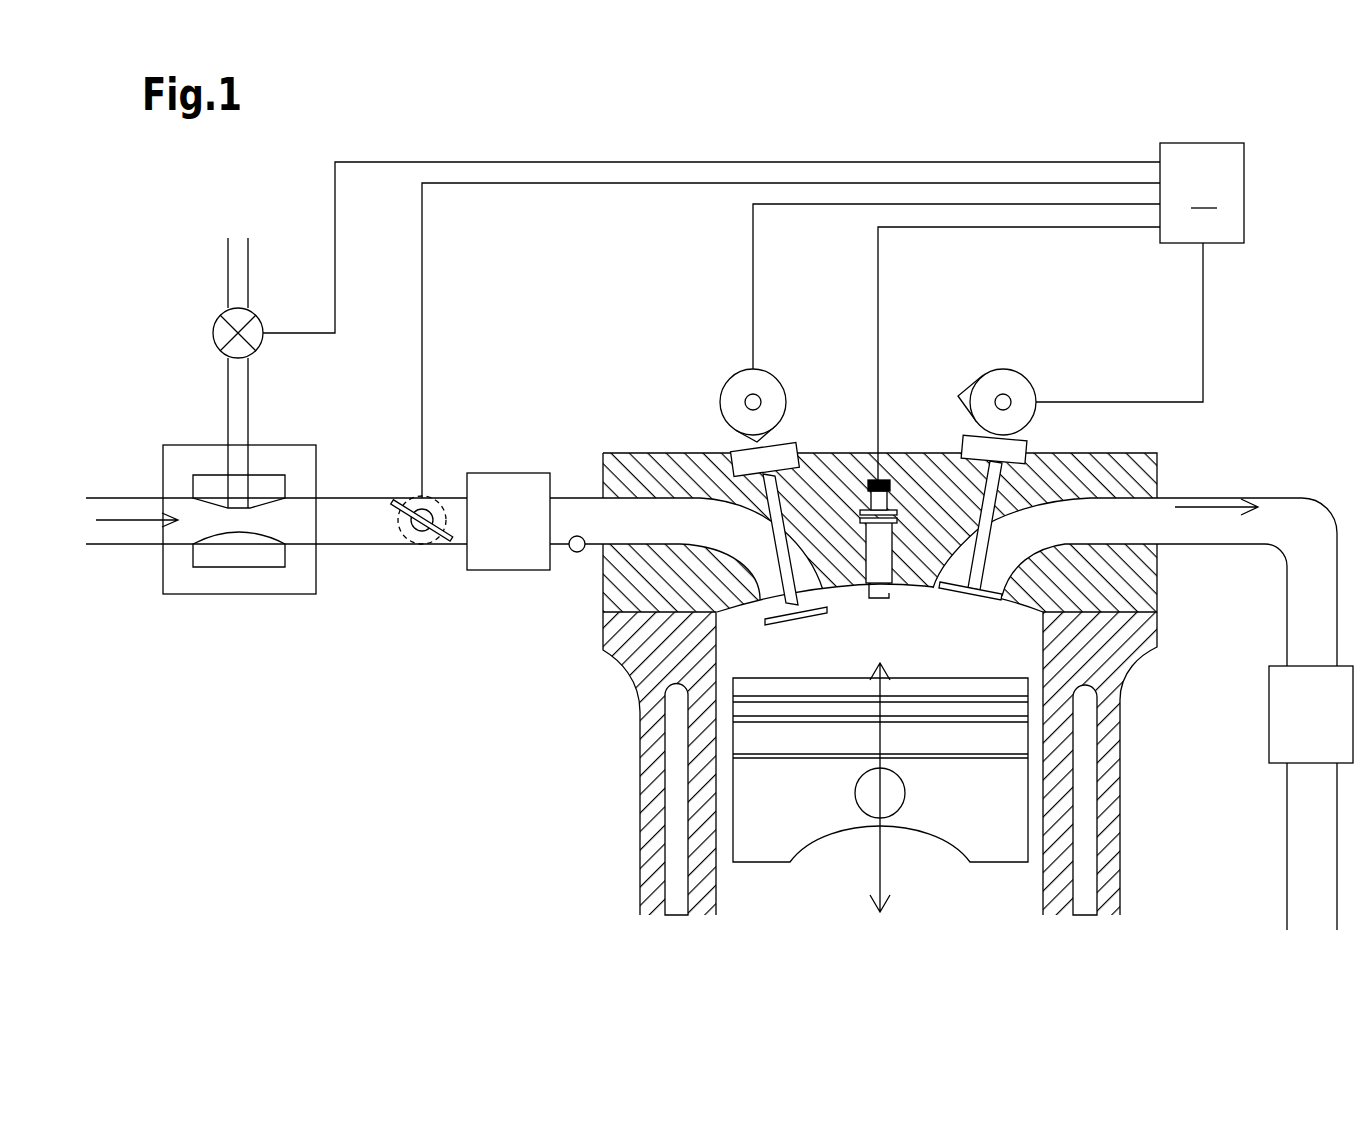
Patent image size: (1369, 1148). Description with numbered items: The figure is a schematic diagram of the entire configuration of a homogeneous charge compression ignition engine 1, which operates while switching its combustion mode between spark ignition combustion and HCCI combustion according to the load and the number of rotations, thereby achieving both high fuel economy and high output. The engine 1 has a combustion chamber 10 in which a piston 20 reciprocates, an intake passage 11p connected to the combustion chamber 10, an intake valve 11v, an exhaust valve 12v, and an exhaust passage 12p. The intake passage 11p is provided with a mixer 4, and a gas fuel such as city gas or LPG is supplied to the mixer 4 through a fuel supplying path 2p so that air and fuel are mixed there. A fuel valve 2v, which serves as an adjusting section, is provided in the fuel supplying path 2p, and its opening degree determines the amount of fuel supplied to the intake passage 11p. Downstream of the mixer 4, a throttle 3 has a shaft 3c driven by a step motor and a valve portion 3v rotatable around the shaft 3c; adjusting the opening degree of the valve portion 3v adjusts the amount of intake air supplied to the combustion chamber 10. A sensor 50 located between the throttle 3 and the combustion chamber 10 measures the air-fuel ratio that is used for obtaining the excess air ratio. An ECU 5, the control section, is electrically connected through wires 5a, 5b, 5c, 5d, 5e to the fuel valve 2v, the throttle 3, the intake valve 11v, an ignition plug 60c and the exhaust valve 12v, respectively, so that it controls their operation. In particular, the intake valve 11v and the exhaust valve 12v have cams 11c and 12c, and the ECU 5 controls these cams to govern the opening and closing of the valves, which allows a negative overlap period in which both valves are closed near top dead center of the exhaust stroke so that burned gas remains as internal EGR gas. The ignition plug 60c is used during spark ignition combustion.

The HCCI engine 1 is at (1310, 167).
The fuel supplying path 2p is at (227, 275).
The fuel valve 2v is at (212, 332).
The throttle 3 is at (470, 483).
The shaft 3c is at (423, 522).
The valve portion 3v is at (450, 538).
The mixer 4 is at (187, 594).
The ECU 5 is at (1202, 193).
The wire 5a is at (1052, 162).
The wire 5b is at (900, 183).
The wire 5c is at (847, 204).
The wire 5d is at (953, 227).
The wire 5e is at (1204, 335).
The combustion chamber 10 is at (763, 662).
The intake passage 11p is at (107, 497).
The cam 11c is at (772, 402).
The intake valve 11v is at (797, 612).
The cam 12c is at (1000, 382).
The exhaust valve 12v is at (967, 592).
The exhaust passage 12p is at (1180, 493).
The piston 20 is at (993, 780).
The sensor 50 is at (577, 552).
The ignition plug 60c is at (883, 575).